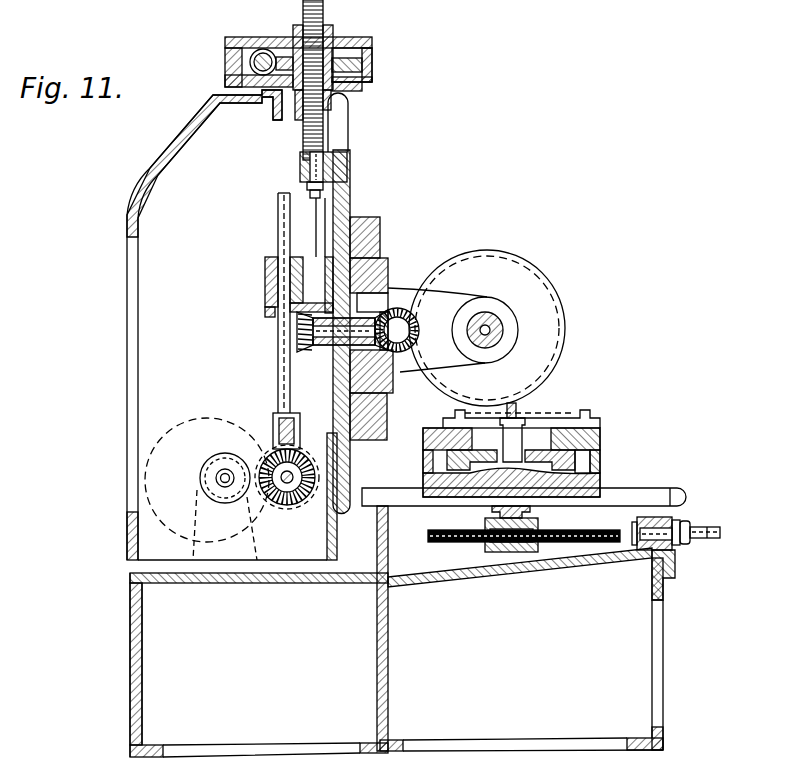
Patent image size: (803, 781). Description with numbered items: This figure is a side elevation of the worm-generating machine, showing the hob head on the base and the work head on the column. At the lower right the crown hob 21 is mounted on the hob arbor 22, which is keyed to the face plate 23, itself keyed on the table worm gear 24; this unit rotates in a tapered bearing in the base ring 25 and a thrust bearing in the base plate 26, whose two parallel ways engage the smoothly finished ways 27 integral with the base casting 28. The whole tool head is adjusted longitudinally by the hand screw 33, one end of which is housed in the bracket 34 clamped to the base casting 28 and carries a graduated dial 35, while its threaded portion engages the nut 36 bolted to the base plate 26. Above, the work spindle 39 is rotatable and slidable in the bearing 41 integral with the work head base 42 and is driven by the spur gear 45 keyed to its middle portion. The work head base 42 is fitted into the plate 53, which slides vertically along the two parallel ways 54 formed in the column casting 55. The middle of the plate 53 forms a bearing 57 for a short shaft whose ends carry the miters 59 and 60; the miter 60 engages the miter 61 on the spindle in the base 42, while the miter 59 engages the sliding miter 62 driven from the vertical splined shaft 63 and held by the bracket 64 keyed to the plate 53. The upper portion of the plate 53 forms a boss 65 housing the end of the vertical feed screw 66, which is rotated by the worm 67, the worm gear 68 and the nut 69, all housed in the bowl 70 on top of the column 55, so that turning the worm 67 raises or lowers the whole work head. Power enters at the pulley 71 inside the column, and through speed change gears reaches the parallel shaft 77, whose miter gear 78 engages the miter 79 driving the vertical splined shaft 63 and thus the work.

The crown hob 21 is at (588, 418).
The hob arbor 22 is at (545, 408).
The face plate 23 is at (602, 442).
The table worm gear 24 is at (600, 470).
The base ring 25 is at (682, 490).
The base plate 26 is at (598, 498).
The ways 27 is at (690, 500).
The base casting 28 is at (667, 603).
The hand screw 33 is at (460, 542).
The bracket 34 is at (675, 578).
The graduated dial 35 is at (686, 545).
The nut 36 is at (540, 550).
The work spindle 39 is at (505, 327).
The bearing 41 is at (490, 298).
The work head base 42 is at (381, 252).
The spur gear 45 is at (562, 300).
The plate 53 is at (352, 222).
The ways 54 is at (349, 133).
The column casting 55 is at (141, 214).
The bearing 57 is at (326, 355).
The miter 59 is at (300, 334).
The miter 60 is at (398, 372).
The miter 61 is at (417, 322).
The sliding miter 62 is at (266, 313).
The vertical splined shaft 63 is at (278, 228).
The bracket 64 is at (266, 285).
The boss 65 is at (300, 164).
The vertical feed screw 66 is at (322, 5).
The worm 67 is at (262, 50).
The worm gear 68 is at (372, 63).
The nut 69 is at (335, 44).
The bowl 70 is at (358, 85).
The pulley 71 is at (192, 416).
The shaft 77 is at (290, 483).
The miter gear 78 is at (274, 542).
The miter 79 is at (252, 458).